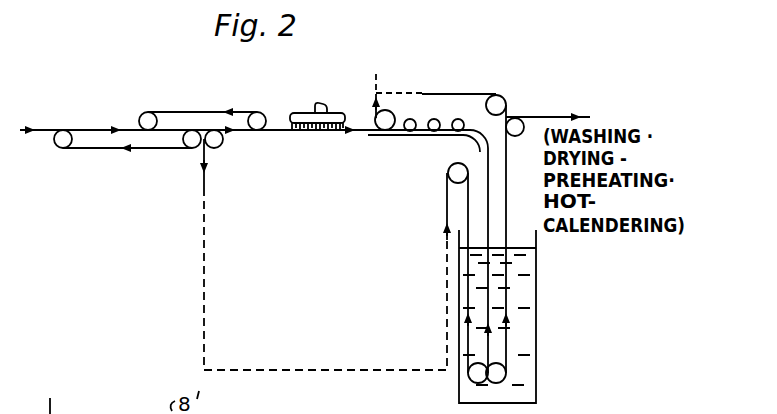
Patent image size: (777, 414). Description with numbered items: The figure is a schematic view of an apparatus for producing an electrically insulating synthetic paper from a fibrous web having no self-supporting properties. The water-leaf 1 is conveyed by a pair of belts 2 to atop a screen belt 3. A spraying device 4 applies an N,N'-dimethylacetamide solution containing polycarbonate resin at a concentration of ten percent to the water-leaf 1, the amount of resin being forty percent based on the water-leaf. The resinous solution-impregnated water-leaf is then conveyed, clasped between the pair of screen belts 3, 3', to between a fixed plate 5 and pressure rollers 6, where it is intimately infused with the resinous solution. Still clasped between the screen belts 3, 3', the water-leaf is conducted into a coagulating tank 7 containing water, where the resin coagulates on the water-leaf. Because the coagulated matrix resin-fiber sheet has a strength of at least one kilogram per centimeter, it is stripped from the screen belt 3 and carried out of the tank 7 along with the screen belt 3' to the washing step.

The water-leaf 1 is at (43, 123).
The pair of belts 2 is at (206, 111).
The screen belt 3 is at (325, 250).
The screen belt 3' is at (435, 91).
The spraying device 4 is at (327, 103).
The fixed plate 5 is at (398, 137).
The pressure rollers 6 is at (461, 118).
The tank 7 is at (537, 318).